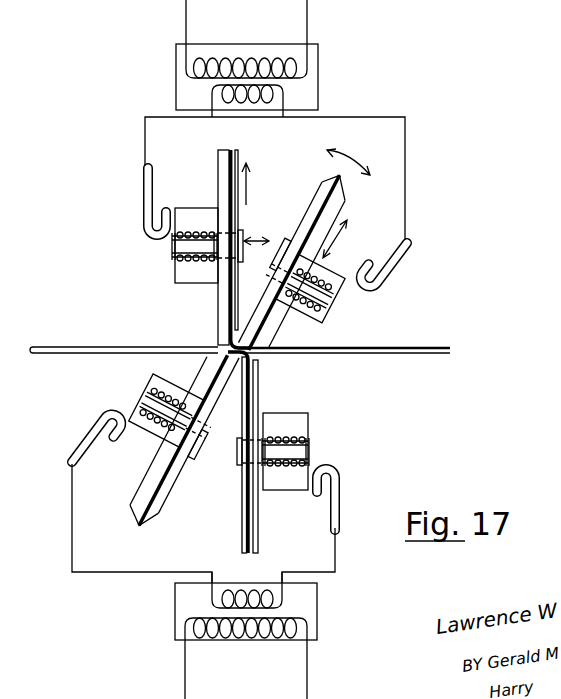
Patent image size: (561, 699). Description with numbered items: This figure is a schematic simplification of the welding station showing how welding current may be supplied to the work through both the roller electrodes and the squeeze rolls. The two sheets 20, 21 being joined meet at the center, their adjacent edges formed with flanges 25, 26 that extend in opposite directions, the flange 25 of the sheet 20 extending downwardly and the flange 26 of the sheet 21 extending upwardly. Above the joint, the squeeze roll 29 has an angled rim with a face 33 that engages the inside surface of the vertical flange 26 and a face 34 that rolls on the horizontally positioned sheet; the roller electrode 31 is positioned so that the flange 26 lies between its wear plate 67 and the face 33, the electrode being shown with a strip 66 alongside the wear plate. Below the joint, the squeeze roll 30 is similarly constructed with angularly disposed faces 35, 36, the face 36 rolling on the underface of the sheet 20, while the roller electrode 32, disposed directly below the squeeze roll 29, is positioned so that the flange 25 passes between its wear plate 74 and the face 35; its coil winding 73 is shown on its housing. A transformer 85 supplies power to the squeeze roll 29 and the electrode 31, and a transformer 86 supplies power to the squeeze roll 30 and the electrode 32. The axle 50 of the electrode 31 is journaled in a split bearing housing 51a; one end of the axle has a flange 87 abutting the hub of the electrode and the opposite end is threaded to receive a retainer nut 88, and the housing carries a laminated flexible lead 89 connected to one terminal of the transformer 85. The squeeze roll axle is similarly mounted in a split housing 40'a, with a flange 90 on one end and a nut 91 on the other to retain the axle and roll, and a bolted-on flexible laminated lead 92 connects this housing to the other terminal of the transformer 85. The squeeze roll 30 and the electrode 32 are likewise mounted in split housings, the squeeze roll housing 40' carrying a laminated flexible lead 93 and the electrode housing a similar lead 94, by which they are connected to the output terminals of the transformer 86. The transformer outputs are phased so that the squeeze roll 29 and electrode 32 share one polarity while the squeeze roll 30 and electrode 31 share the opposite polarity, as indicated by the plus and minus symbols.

The transformer 85 is at (262, 38).
The transformer 86 is at (265, 687).
The upper plate strip 66 is at (221, 150).
The wear plate 67 is at (236, 150).
The roller electrode 31 is at (209, 180).
The shaft or axle 50 is at (200, 237).
The laminated flexible lead 89 is at (143, 191).
The retainer nut 88 is at (172, 247).
The split bearing housing 51a is at (182, 270).
The flange 87 is at (244, 238).
The flange 90 is at (273, 256).
The face 33 is at (327, 181).
The face 34 is at (349, 189).
The squeeze roll 29 is at (382, 222).
The flexible laminated lead 92 is at (411, 251).
The nut 91 is at (347, 295).
The split housing 40'a is at (333, 295).
The flange 26 is at (265, 336).
The sheet 21 is at (450, 353).
The sheet 20 is at (175, 345).
The split housing 40' is at (157, 413).
The laminated flexible lead 93 is at (86, 431).
The squeeze roll 30 is at (137, 478).
The face 36 is at (131, 517).
The face 35 is at (146, 521).
The wear plate 74 is at (243, 517).
The coil 73 is at (262, 517).
The roller electrode 32 is at (300, 397).
The lead 94 is at (341, 472).
The flange 25 is at (262, 371).